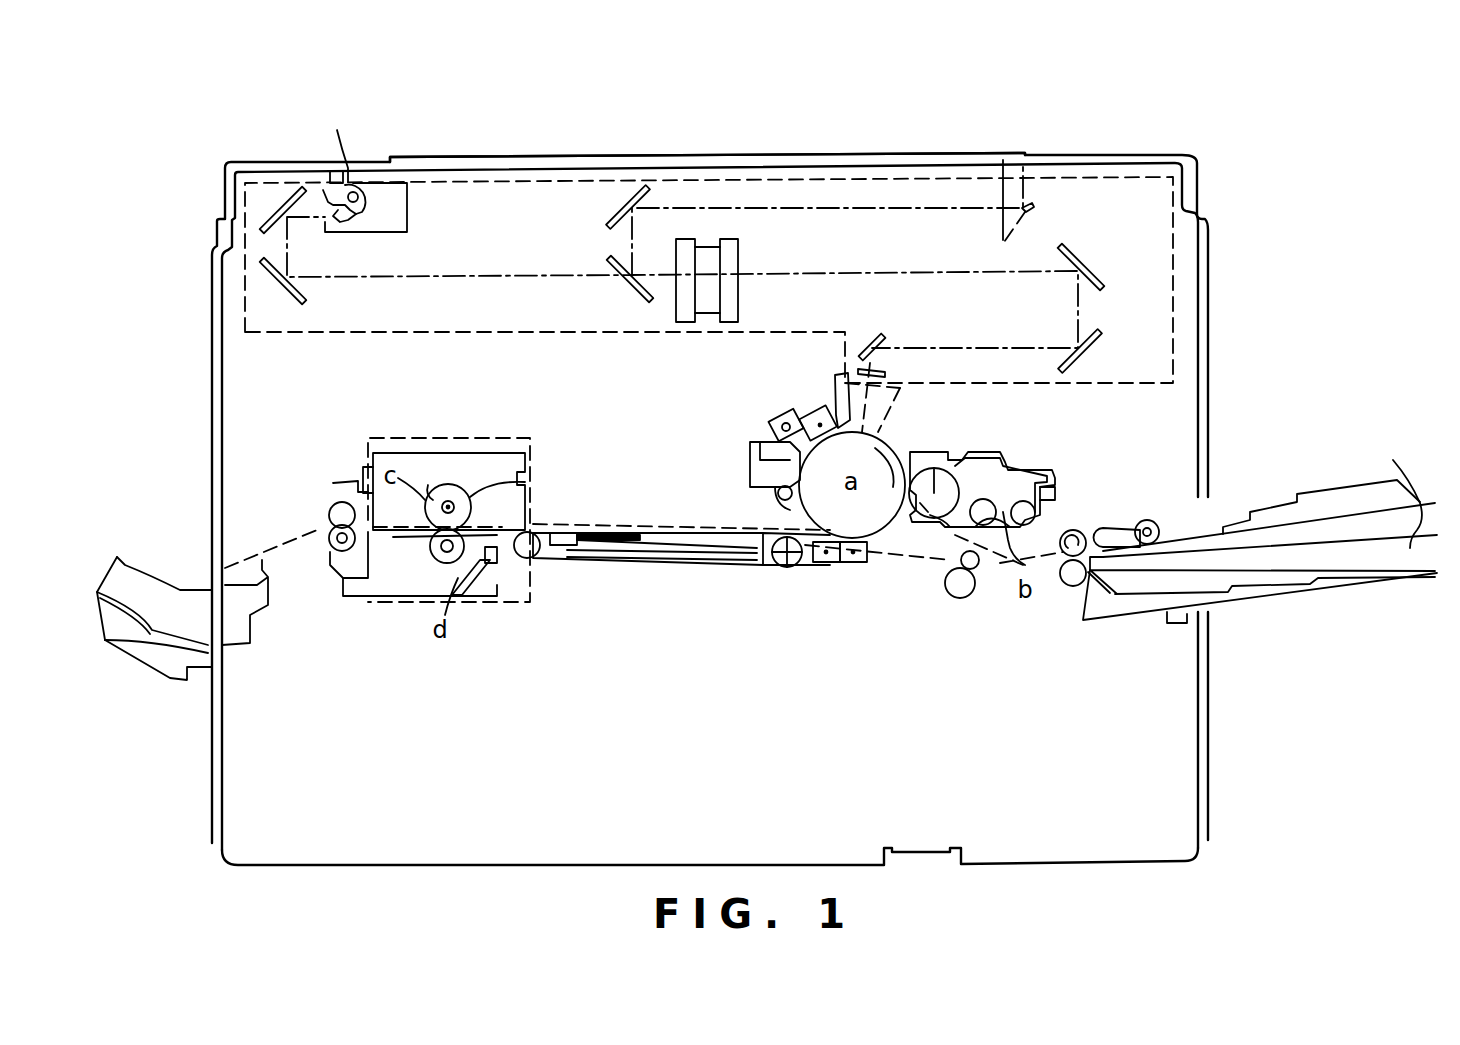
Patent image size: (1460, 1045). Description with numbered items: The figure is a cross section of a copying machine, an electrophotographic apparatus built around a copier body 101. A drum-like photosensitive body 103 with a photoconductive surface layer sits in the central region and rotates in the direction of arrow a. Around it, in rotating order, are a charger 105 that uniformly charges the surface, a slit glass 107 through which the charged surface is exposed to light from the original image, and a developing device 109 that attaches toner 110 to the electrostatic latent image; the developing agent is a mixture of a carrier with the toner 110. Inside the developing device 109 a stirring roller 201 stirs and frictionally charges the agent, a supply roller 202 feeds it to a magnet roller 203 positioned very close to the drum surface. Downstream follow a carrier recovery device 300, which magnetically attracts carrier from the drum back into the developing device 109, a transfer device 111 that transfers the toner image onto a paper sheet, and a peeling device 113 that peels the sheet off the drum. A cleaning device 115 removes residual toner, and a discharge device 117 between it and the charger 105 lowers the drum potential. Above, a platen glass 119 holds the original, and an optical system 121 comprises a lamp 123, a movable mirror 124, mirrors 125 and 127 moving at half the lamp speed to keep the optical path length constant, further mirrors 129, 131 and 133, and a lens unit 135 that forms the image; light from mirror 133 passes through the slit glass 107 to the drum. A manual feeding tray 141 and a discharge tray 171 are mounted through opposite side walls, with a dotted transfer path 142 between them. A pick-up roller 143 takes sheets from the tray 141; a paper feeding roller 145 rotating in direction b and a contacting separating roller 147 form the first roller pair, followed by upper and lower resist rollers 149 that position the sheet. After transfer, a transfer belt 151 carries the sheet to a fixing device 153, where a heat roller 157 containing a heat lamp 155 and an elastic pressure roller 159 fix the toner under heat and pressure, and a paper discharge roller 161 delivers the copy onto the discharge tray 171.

The copier body 101 is at (1005, 102).
The photosensitive body 103 is at (890, 445).
The charger 105 is at (815, 408).
The slit glass 107 is at (888, 373).
The developing device 109 is at (1000, 460).
The toner 110 is at (1020, 476).
The transfer device 111 is at (845, 565).
The peeling device 113 is at (808, 566).
The cleaning device 115 is at (755, 468).
The discharge device 117 is at (775, 414).
The platen glass 119 is at (880, 157).
The optical system 121 is at (1125, 195).
The lamp 123 is at (349, 164).
The mirror 124 is at (345, 222).
The mirror 125 is at (290, 198).
The mirror 127 is at (272, 290).
The mirror 129 is at (1088, 262).
The mirror 131 is at (1098, 358).
The mirror 133 is at (870, 338).
The lens unit 135 is at (732, 238).
The manual feeding tray 141 is at (1415, 500).
The transfer path 142 is at (693, 530).
The pick-up roller 143 is at (1140, 522).
The paper feeding roller 145 is at (1078, 538).
The separating roller 147 is at (1073, 590).
The resist rollers 149 is at (985, 572).
The transfer belt 151 is at (566, 560).
The fixing device 153 is at (360, 605).
The heat lamp 155 is at (452, 485).
The heat roller 157 is at (505, 483).
The pressure roller 159 is at (440, 562).
The paper discharge roller 161 is at (330, 515).
The discharge tray 171 is at (158, 665).
The stirring roller 201 is at (1042, 500).
The supply roller 202 is at (950, 580).
The magnet roller 203 is at (936, 485).
The carrier recovery device 300 is at (878, 545).